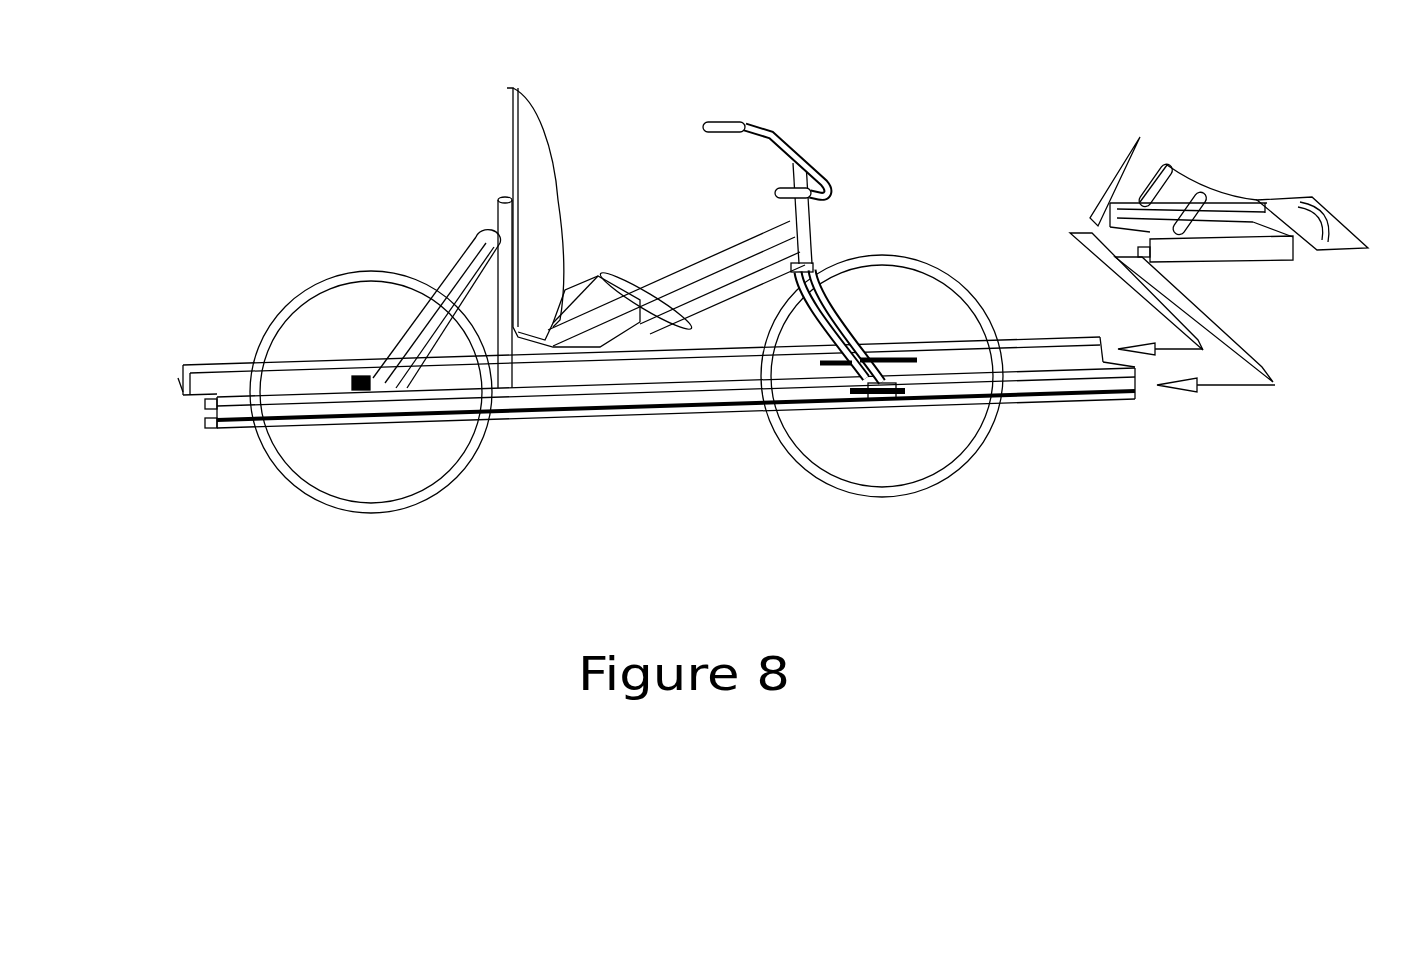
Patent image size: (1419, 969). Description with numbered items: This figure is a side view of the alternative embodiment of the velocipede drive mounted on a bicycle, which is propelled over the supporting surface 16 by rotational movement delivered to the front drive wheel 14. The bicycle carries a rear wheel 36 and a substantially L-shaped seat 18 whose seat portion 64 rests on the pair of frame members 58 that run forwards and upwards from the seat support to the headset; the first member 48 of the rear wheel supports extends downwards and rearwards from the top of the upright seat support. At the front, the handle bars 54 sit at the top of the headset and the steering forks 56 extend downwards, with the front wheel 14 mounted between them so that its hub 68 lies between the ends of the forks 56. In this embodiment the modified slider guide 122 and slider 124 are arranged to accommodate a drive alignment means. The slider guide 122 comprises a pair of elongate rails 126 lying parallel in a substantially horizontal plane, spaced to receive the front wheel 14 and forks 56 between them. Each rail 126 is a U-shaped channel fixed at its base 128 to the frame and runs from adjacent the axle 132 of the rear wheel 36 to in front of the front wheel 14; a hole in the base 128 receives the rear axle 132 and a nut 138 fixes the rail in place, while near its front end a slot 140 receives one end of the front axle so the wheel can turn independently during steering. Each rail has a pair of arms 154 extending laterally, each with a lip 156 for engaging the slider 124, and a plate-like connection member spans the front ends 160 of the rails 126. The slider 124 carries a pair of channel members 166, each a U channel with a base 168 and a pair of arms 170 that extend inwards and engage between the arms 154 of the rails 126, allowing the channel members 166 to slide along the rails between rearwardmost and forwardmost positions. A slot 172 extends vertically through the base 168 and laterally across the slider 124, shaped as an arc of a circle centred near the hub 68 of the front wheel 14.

The front drive wheel 14 is at (882, 341).
The supporting surface 16 is at (573, 217).
The seat 18 is at (418, 247).
The rear wheel 36 is at (355, 324).
The first member 48 is at (410, 298).
The handle bars 54 is at (775, 117).
The steering forks 56 is at (863, 258).
The frame members 58 is at (676, 260).
The seat portion 64 is at (645, 260).
The hub 68 is at (816, 466).
The slider guide 122 is at (198, 385).
The slider 124 is at (1201, 143).
The rails 126 is at (659, 369).
The base 128 is at (215, 410).
The axle 132 is at (345, 349).
The nut 138 is at (431, 485).
The slot 140 is at (925, 436).
The arms 154 is at (212, 411).
The lip 156 is at (330, 485).
The front ends 160 is at (678, 337).
The channel members 166 is at (1140, 240).
The base 168 is at (1284, 264).
The arms 170 is at (1140, 137).
The slot 172 is at (1323, 176).